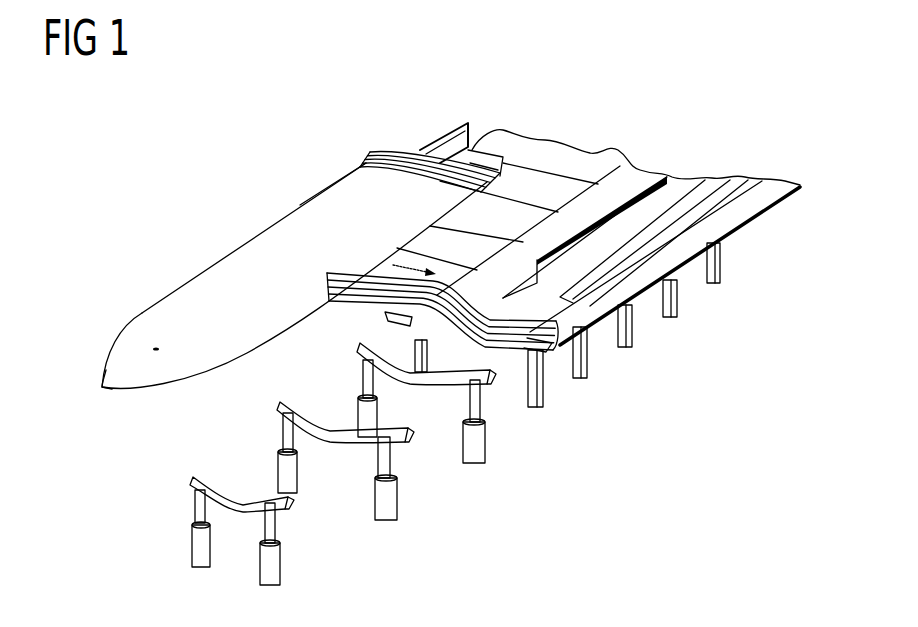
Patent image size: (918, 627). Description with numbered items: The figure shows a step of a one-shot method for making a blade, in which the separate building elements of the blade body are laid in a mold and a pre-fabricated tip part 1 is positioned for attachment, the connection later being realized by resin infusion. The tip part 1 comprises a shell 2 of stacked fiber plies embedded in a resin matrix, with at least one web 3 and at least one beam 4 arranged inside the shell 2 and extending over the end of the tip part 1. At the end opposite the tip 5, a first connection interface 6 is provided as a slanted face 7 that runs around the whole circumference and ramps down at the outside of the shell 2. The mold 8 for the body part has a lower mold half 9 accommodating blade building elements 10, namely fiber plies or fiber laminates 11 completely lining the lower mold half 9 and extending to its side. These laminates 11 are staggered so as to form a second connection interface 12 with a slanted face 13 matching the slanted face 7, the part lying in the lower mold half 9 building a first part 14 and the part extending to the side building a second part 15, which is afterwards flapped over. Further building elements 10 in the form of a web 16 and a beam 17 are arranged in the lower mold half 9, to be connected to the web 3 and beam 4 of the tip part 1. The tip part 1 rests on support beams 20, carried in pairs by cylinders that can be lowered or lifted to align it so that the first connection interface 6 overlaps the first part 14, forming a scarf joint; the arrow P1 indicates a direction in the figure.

The tip part 1 is at (270, 301).
The shell 2 is at (203, 290).
The web 3 is at (452, 128).
The beam 4 is at (493, 158).
The tip 5 is at (102, 389).
The first connection interface 6 is at (408, 132).
The slanted face 7 is at (392, 155).
The mold 8 is at (646, 309).
The lower mold half 9 is at (740, 213).
The blade building elements 10 is at (611, 124).
The fiber plies or fiber laminates 11 is at (513, 213).
The second connection interface 12 is at (512, 364).
The slanted face 13 is at (464, 348).
The first part 14 is at (530, 314).
The second part 15 is at (367, 292).
The web 16 is at (670, 184).
The beam 17 is at (742, 180).
The support beams 20 is at (230, 508).
The direction P1 is at (312, 358).